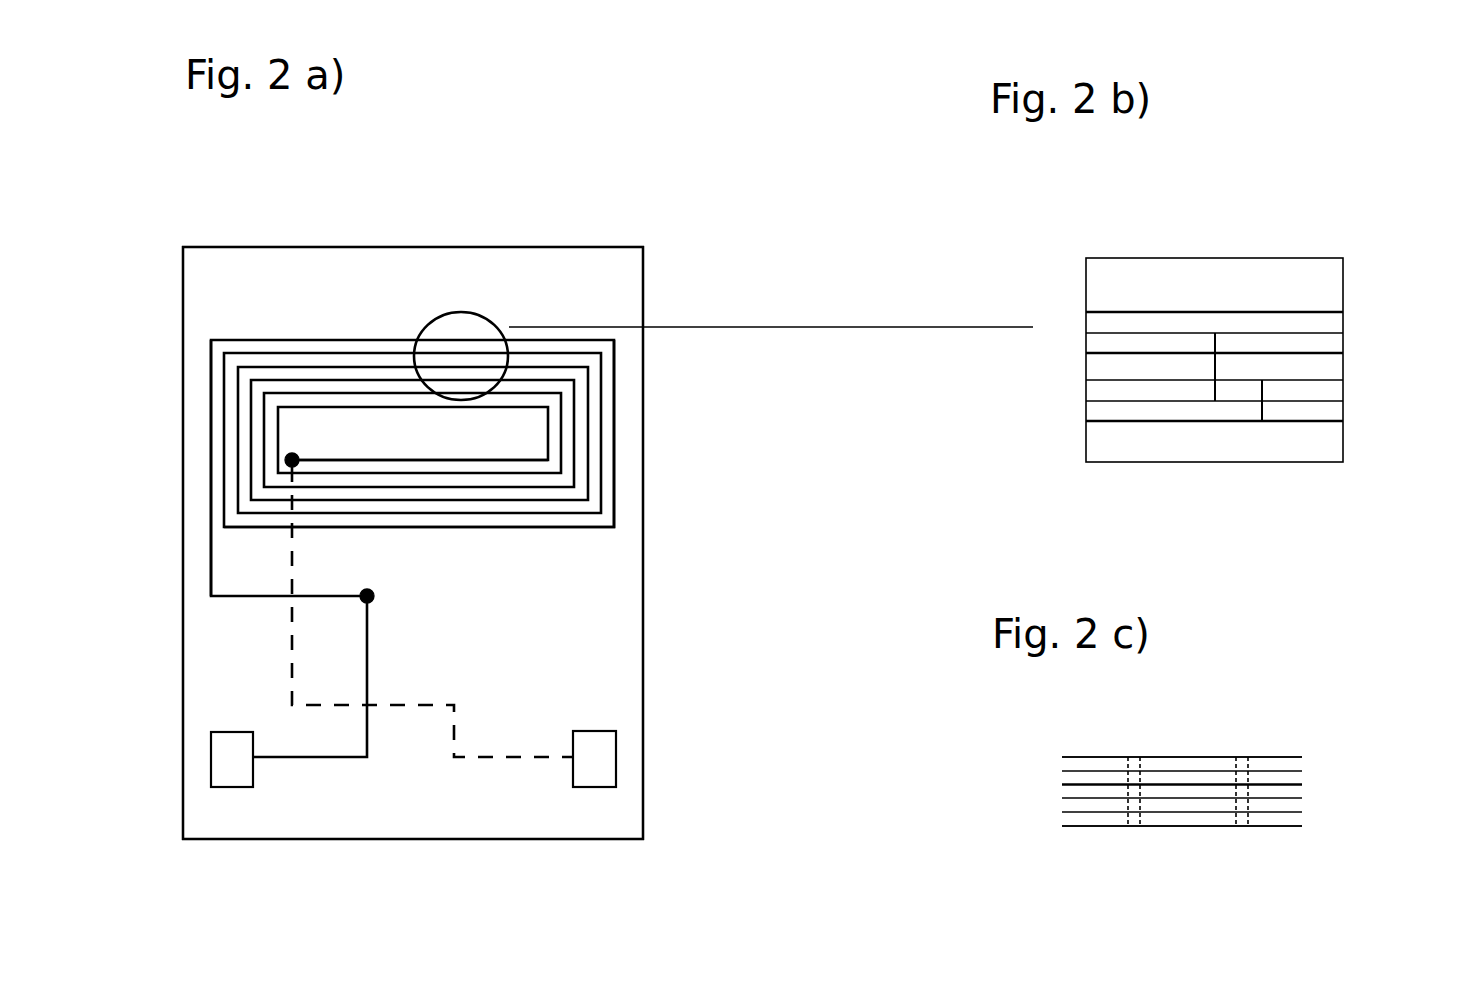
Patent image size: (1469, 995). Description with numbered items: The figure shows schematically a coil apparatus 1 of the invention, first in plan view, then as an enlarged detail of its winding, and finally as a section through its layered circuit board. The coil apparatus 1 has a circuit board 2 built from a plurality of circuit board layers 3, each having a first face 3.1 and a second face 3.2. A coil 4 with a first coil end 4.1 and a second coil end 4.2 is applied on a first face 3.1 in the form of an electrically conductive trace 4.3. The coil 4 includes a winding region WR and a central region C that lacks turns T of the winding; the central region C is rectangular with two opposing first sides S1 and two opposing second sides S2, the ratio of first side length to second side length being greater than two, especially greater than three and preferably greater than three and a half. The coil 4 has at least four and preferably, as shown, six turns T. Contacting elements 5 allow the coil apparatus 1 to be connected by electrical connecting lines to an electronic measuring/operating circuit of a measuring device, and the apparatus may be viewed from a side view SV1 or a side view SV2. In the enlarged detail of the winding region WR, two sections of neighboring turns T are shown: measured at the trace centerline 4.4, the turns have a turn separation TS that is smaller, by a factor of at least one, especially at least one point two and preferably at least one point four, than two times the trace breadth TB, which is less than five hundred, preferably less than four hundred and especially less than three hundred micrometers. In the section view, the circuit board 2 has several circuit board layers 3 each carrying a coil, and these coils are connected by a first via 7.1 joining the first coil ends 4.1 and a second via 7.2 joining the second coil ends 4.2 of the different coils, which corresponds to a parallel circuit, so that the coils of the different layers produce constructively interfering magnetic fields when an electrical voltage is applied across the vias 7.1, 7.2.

In FIG. 2a, the coil apparatus 1 is at (642, 205).
In FIG. 2a, the circuit board 2 is at (306, 812).
In FIG. 2b, the circuit board 2 is at (1100, 287).
In FIG. 2a, the circuit board layers 3 is at (482, 825).
In FIG. 2c, the circuit board layers 3 is at (1297, 818).
In FIG. 2a, the first face 3.1 is at (561, 813).
In FIG. 2c, the first face 3.1 is at (1075, 757).
In FIG. 2c, the second face 3.2 is at (1066, 772).
In FIG. 2a, the coil 4 is at (629, 513).
In FIG. 2a, the first coil end 4.1 is at (211, 543).
In FIG. 2a, the second coil end 4.2 is at (320, 463).
In FIG. 2a, the electrically conductive trace 4.3 is at (591, 532).
In FIG. 2b, the electrically conductive trace 4.3 is at (1315, 340).
In FIG. 2b, the trace centerline 4.4 is at (1338, 333).
In FIG. 2a, the contacting elements 5 is at (226, 772).
In FIG. 2a, the first via 7.1 is at (387, 611).
In FIG. 2c, the first via 7.1 is at (1128, 838).
In FIG. 2a, the second via 7.2 is at (285, 460).
In FIG. 2c, the second via 7.2 is at (1249, 838).
In FIG. 2a, the turns T is at (615, 367).
In FIG. 2a, the central region C is at (509, 433).
In FIG. 2a, the first sides S1 is at (358, 460).
In FIG. 2a, the second sides S2 is at (280, 433).
In FIG. 2a, the first connection region SV1 is at (710, 515).
In FIG. 2a, the side view SV2 is at (415, 867).
In FIG. 2a, the winding region WR is at (266, 543).
In FIG. 2b, the turn separation TS is at (1215, 363).
In FIG. 2b, the trace breadth TB is at (1262, 407).